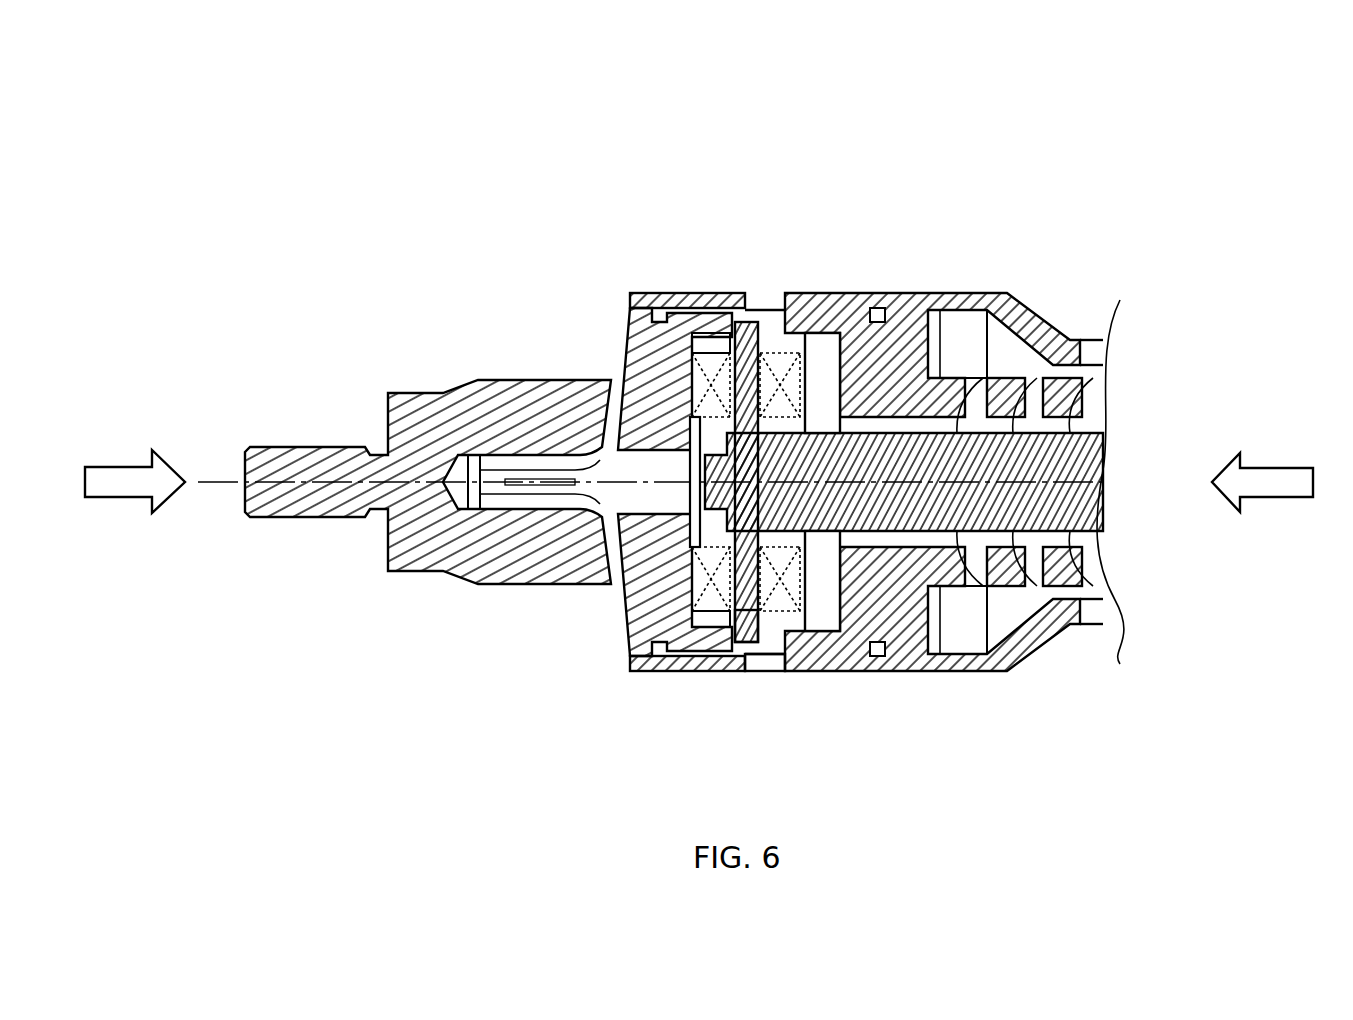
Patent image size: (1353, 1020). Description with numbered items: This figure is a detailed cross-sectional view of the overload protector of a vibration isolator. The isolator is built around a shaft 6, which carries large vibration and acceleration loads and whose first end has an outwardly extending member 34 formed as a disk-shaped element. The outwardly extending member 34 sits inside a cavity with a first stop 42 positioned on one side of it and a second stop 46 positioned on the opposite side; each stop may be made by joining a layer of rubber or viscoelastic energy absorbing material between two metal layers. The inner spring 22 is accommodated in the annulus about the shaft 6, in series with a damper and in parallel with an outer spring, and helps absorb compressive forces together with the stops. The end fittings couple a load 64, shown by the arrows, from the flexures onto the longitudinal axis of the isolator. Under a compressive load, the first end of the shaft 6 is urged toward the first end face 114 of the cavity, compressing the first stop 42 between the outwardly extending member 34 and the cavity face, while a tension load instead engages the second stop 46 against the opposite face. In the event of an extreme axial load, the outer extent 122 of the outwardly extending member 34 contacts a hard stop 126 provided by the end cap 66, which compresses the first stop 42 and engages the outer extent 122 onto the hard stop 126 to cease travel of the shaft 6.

The shaft 6 is at (1085, 465).
The inner spring 22 is at (1017, 590).
The outwardly extending member 34 is at (742, 340).
The first stop 42 is at (710, 590).
The second stop 46 is at (777, 377).
The load 64 is at (118, 460).
The end cap 66 is at (632, 357).
The first end face 114 is at (686, 375).
The outer extent 122 is at (750, 643).
The hard stop 126 is at (693, 670).